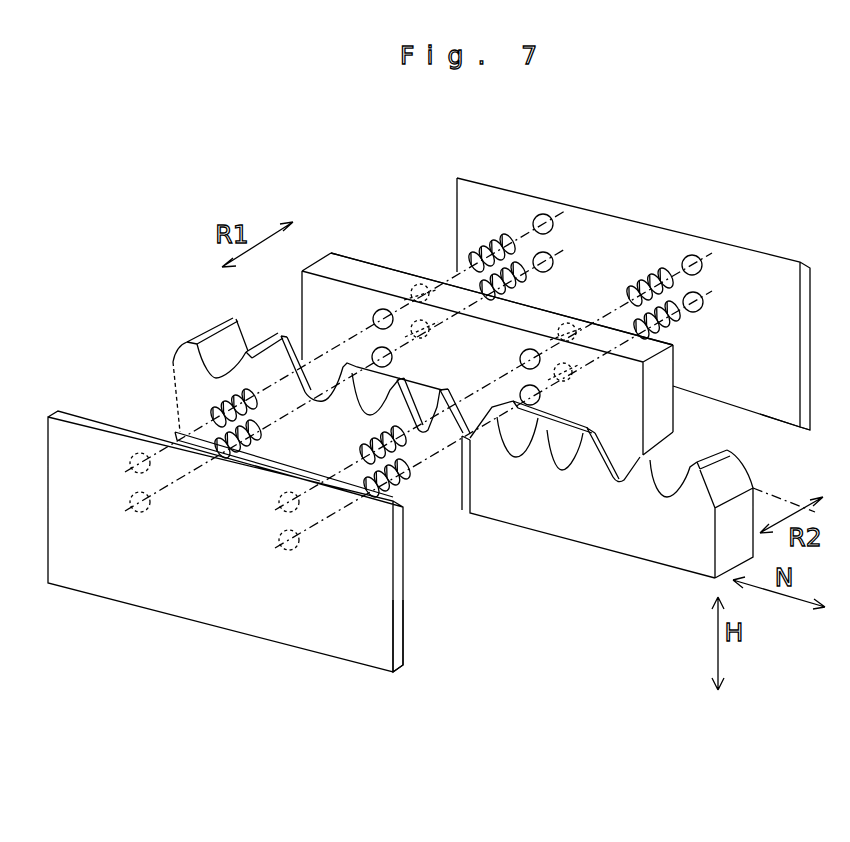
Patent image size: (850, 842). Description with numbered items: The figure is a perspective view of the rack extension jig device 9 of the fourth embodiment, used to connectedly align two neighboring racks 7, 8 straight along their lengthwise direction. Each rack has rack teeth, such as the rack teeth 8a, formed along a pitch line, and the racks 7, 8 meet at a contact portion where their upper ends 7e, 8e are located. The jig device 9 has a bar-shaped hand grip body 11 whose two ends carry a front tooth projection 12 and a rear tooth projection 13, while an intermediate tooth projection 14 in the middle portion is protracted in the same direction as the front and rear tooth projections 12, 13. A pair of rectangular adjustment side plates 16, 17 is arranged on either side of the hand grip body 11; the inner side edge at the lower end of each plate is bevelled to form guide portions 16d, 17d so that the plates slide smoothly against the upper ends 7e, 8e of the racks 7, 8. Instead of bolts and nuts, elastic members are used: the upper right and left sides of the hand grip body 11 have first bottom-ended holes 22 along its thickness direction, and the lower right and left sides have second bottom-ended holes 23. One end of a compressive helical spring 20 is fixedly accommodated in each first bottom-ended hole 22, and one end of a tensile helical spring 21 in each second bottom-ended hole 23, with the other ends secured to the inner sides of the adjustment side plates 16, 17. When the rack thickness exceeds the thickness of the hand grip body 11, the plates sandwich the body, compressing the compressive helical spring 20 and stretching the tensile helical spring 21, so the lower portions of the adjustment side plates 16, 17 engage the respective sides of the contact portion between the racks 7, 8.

The rack 7 is at (333, 452).
The upper end of rack 7e is at (244, 320).
The rack 8 is at (581, 512).
The rack teeth 8a is at (517, 441).
The upper end of rack 8e is at (650, 478).
The rack extension jig device 9 is at (383, 251).
The hand grip body 11 is at (542, 302).
The front tooth projection 12 is at (300, 402).
The rear tooth projection 13 is at (620, 463).
The intermediate tooth projection 14 is at (454, 442).
The adjustment side plate 16 is at (345, 637).
The guide portion 16d is at (405, 661).
The adjustment side plate 17 is at (770, 250).
The guide portion 17d is at (786, 430).
The compressive helical spring 20 is at (492, 240).
The tensile helical spring 21 is at (545, 250).
The first bottom-ended hole 22 is at (376, 321).
The second bottom-ended hole 23 is at (398, 365).